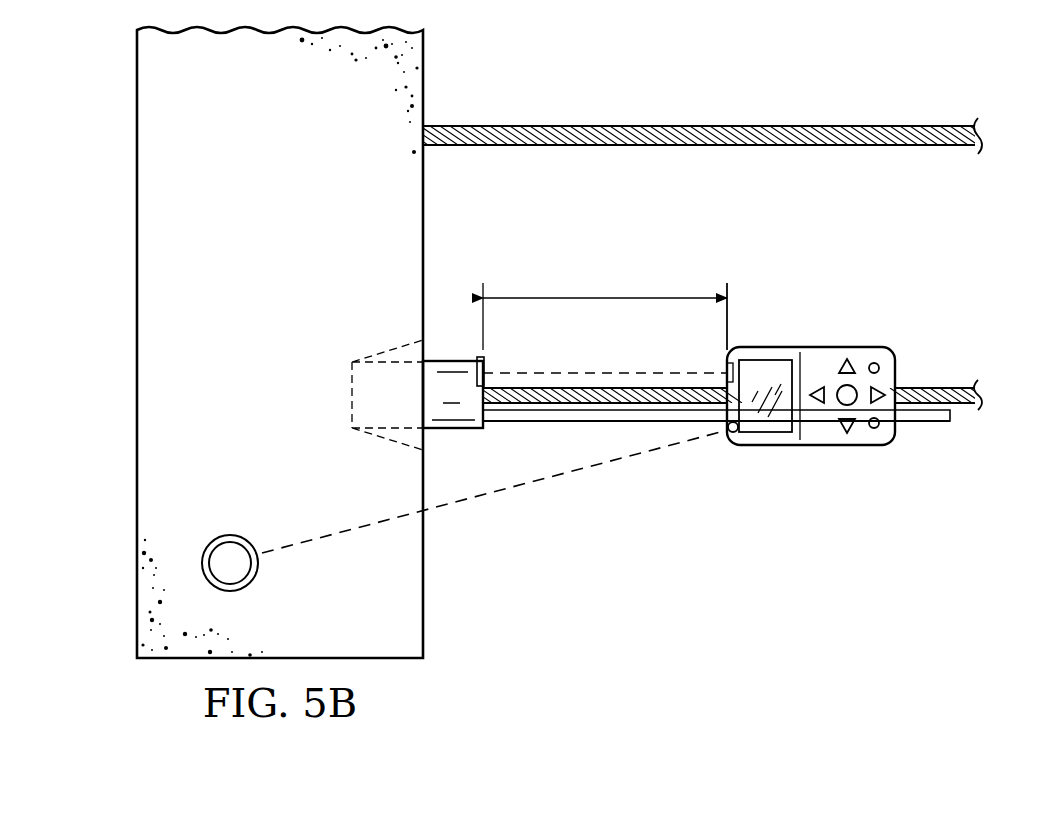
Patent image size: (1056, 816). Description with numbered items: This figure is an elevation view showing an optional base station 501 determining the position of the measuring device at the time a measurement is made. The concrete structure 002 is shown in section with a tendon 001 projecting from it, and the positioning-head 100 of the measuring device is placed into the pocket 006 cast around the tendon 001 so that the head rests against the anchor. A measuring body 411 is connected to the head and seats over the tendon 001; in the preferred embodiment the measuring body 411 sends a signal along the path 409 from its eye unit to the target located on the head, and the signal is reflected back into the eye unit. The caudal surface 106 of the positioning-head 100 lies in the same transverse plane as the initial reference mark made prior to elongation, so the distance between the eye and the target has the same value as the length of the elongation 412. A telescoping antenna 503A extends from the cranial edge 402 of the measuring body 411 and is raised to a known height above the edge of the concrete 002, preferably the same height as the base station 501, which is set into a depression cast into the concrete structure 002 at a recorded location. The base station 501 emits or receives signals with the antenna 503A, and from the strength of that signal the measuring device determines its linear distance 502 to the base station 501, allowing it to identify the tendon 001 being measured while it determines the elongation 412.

The concrete structure 002 is at (137, 275).
The pocket 006 is at (393, 346).
The positioning-head 100 is at (452, 308).
The caudal surface 106 is at (483, 330).
The elongation 412 is at (608, 298).
The cranial edge 402 is at (727, 318).
The signal path 409 is at (602, 373).
The tendon 001 is at (930, 388).
The measuring body 411 is at (841, 468).
The telescoping antenna 503A is at (725, 436).
The linear distance 502 is at (545, 478).
The base station 501 is at (224, 540).